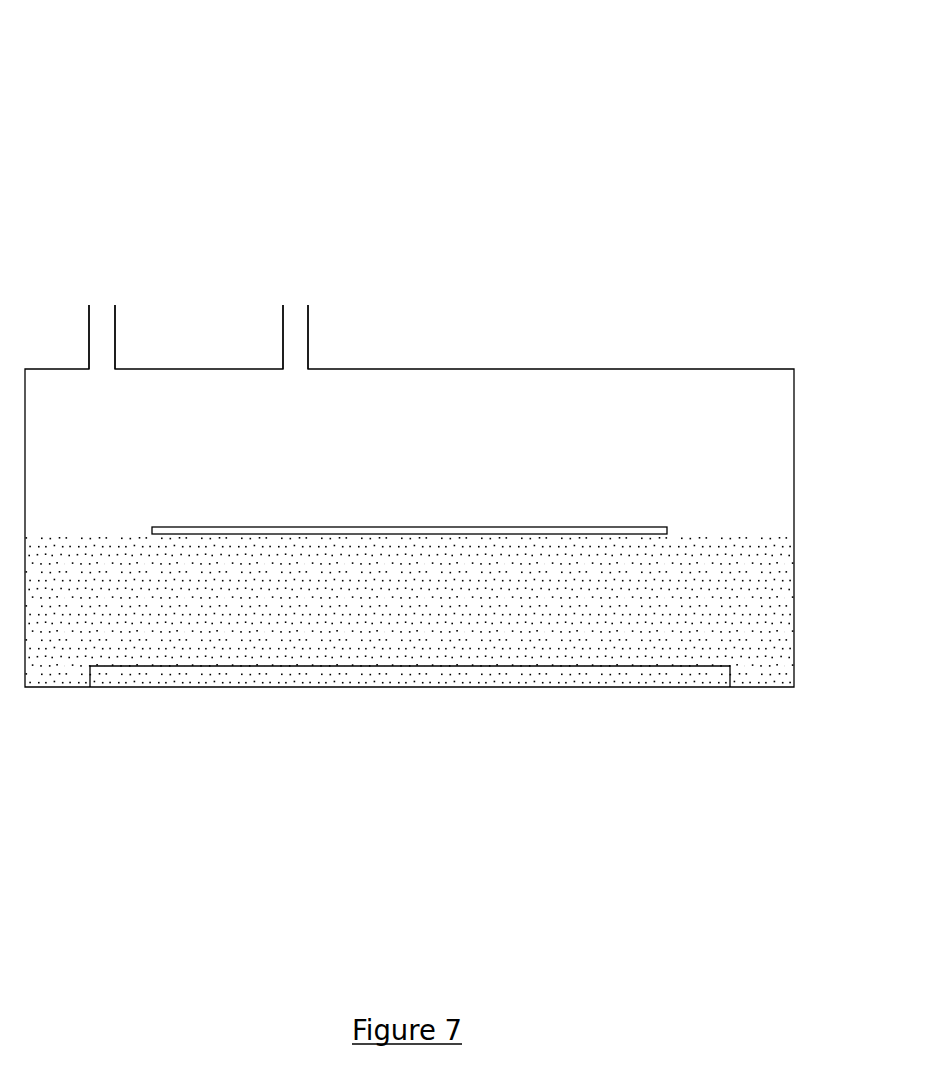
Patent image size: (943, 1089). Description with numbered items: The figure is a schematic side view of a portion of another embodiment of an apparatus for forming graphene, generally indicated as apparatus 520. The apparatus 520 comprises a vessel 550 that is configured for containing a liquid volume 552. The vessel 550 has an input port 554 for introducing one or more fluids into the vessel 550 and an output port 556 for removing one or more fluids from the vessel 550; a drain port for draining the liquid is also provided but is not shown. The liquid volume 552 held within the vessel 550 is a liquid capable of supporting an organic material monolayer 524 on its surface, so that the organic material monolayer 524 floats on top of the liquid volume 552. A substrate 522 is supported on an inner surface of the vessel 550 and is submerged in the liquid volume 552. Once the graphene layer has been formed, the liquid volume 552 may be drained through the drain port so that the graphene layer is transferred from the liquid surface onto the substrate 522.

The apparatus for forming graphene 520 is at (741, 71).
The vessel 550 is at (734, 369).
The input port 554 is at (110, 326).
The output port 556 is at (302, 326).
The liquid volume 552 is at (720, 607).
The organic material monolayer 524 is at (636, 527).
The substrate 522 is at (717, 679).